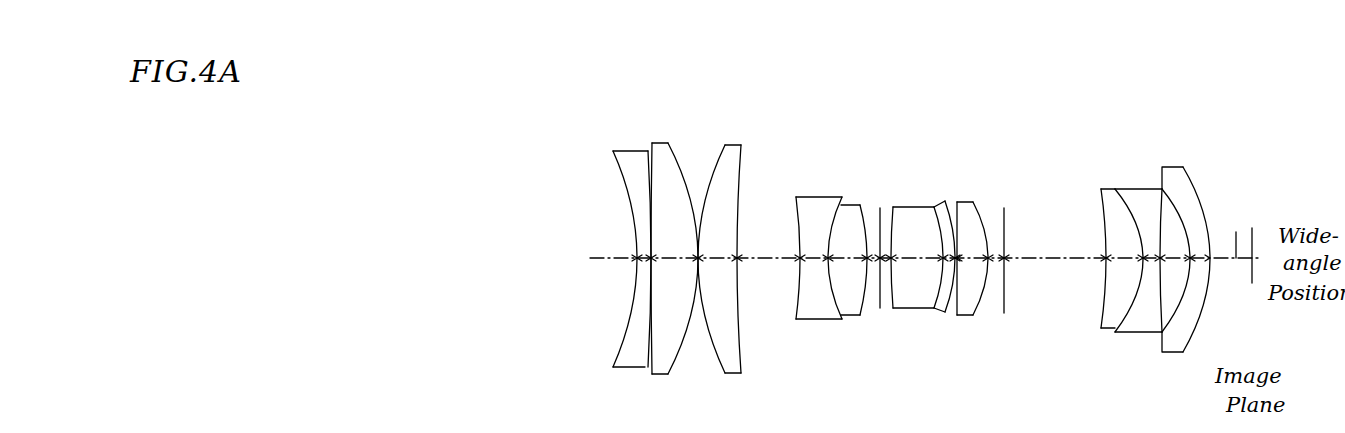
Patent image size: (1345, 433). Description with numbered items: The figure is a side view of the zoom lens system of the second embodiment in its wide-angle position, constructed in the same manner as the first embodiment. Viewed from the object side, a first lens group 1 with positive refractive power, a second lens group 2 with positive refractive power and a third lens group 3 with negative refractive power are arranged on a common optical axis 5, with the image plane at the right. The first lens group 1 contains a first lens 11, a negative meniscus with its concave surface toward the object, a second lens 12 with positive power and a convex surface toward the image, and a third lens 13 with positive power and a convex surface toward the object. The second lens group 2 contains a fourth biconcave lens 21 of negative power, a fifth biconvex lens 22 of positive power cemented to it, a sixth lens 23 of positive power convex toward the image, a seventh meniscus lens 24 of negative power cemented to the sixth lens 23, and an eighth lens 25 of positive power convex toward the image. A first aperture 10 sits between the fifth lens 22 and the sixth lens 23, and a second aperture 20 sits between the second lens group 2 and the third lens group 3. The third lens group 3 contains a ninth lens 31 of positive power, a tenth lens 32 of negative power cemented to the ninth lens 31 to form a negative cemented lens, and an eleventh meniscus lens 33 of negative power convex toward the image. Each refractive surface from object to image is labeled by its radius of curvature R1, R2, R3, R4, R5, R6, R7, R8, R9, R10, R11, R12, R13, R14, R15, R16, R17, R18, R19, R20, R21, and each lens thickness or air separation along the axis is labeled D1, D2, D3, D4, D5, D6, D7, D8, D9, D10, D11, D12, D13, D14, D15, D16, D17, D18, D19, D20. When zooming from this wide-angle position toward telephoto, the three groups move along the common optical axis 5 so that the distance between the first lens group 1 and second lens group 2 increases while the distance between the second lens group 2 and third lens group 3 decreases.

The first lens group 1 is at (779, 105).
The second lens group 2 is at (1003, 105).
The third lens group 3 is at (1245, 105).
The common optical axis 5 is at (1236, 232).
The first aperture 10 is at (843, 215).
The first lens 11 is at (607, 241).
The second lens 12 is at (682, 238).
The third lens 13 is at (736, 235).
The second aperture 20 is at (1027, 265).
The fourth biconcave lens 21 is at (807, 256).
The fifth biconvex lens 22 is at (812, 241).
The sixth lens 23 is at (908, 217).
The seventh meniscus lens 24 is at (939, 256).
The eighth lens 25 is at (982, 215).
The ninth lens 31 is at (1116, 234).
The tenth lens 32 is at (1144, 227).
The eleventh meniscus lens 33 is at (1202, 236).
The radius of curvature of refractive surface R1 is at (615, 167).
The radius of curvature of refractive surface R2 is at (648, 170).
The radius of curvature of refractive surface R3 is at (650, 210).
The radius of curvature of refractive surface R4 is at (687, 173).
The radius of curvature of refractive surface R5 is at (717, 172).
The radius of curvature of refractive surface R6 is at (740, 175).
The radius of curvature of refractive surface R7 is at (797, 208).
The radius of curvature of refractive surface R8 is at (838, 210).
The radius of curvature of refractive surface R9 is at (863, 217).
The radius of curvature of refractive surface R10 is at (879, 227).
The radius of curvature of refractive surface R11 is at (892, 210).
The radius of curvature of refractive surface R12 is at (937, 207).
The radius of curvature of refractive surface R13 is at (950, 214).
The radius of curvature of refractive surface R14 is at (958, 212).
The radius of curvature of refractive surface R15 is at (975, 205).
The radius of curvature of refractive surface R16 is at (1005, 212).
The radius of curvature of refractive surface R17 is at (1101, 192).
The radius of curvature of refractive surface R18 is at (1120, 190).
The radius of curvature of refractive surface R19 is at (1160, 190).
The radius of curvature of refractive surface R20 is at (1170, 203).
The radius of curvature of refractive surface R21 is at (1203, 200).
The lens thickness or separation D1 is at (637, 262).
The lens thickness or separation D2 is at (648, 263).
The lens thickness or separation D3 is at (672, 262).
The lens thickness or separation D4 is at (698, 262).
The lens thickness or separation D5 is at (718, 262).
The lens thickness or separation D6 is at (767, 262).
The lens thickness or separation D7 is at (803, 262).
The lens thickness or separation D8 is at (847, 262).
The lens thickness or separation D9 is at (873, 262).
The lens thickness or separation D10 is at (886, 262).
The lens thickness or separation D11 is at (908, 262).
The lens thickness or separation D12 is at (949, 262).
The lens thickness or separation D13 is at (956, 262).
The lens thickness or separation D14 is at (972, 262).
The lens thickness or separation D15 is at (996, 262).
The lens thickness or separation D16 is at (1057, 262).
The lens thickness or separation D17 is at (1130, 262).
The lens thickness or separation D18 is at (1152, 262).
The lens thickness or separation D19 is at (1172, 262).
The lens thickness or separation D20 is at (1203, 262).